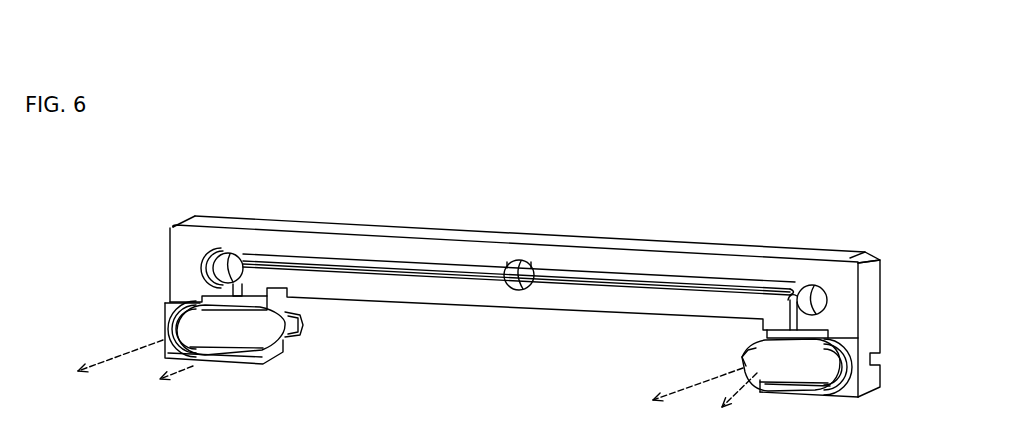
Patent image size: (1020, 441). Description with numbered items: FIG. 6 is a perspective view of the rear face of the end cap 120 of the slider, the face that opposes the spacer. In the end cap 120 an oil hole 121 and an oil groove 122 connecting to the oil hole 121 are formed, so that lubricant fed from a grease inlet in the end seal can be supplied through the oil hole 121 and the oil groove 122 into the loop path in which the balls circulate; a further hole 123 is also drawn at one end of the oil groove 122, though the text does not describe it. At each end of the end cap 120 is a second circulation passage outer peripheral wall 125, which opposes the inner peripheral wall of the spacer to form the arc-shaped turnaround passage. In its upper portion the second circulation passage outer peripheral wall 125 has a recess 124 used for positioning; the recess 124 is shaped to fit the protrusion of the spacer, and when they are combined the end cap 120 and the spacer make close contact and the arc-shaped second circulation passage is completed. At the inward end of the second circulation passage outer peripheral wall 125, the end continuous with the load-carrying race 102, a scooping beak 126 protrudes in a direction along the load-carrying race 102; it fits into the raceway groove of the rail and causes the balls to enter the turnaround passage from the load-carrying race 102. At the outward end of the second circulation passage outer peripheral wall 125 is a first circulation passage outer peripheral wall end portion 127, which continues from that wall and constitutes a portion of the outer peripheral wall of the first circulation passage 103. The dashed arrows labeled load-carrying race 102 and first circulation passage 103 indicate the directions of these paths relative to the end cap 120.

The end cap 120 is at (656, 196).
The oil hole 121 is at (514, 291).
The oil groove 122 is at (411, 283).
The left ball 123 is at (227, 262).
The recess 124 is at (763, 332).
The second circulation passage outer peripheral wall 125 is at (280, 352).
The scooping beak 126 is at (303, 327).
The first circulation passage outer peripheral wall end portion 127 is at (172, 326).
The load-carrying race 102 is at (434, 399).
The first circulation passage 103 is at (400, 386).